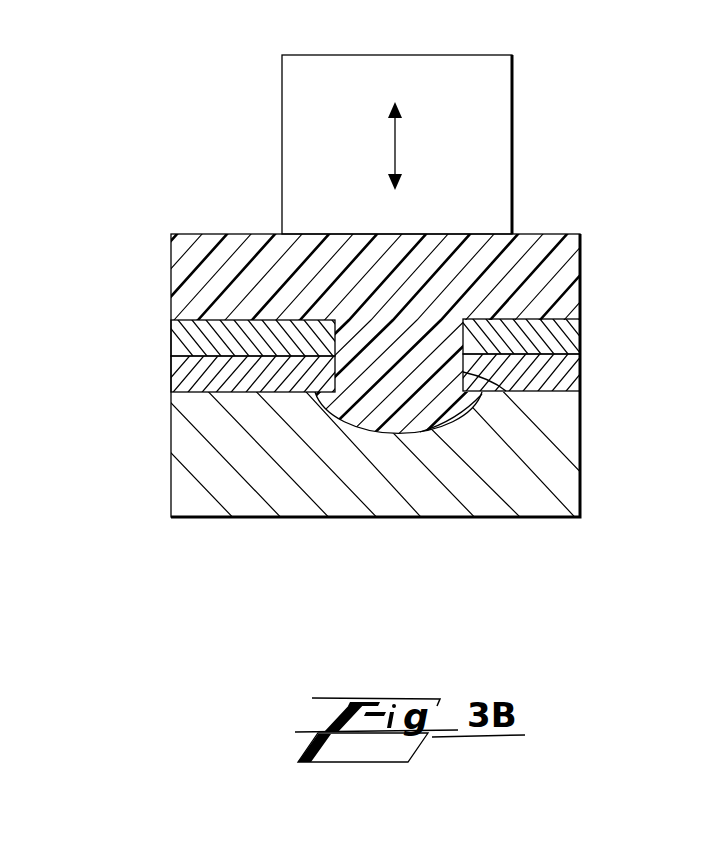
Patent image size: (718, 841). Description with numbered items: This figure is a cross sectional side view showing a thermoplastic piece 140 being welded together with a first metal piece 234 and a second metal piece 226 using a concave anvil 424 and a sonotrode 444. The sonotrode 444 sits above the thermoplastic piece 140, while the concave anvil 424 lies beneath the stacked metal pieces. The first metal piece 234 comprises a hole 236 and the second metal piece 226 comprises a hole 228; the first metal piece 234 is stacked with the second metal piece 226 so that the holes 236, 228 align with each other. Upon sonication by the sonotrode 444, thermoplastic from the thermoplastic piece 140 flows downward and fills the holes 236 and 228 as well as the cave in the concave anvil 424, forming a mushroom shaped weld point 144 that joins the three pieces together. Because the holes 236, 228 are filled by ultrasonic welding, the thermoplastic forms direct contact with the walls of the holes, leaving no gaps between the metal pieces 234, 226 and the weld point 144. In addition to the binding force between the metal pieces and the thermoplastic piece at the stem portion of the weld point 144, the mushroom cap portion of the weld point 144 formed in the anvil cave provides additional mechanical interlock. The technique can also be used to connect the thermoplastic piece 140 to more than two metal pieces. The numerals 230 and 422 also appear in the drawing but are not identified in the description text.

The thermoplastic piece 140 is at (220, 234).
The weld point 144 is at (351, 427).
The second metal piece 226 is at (171, 372).
The hole 228 is at (517, 395).
The device 230 is at (0, 297).
The first metal piece 234 is at (171, 342).
The hole 236 is at (463, 343).
The assembly 422 is at (0, 378).
The concave anvil 424 is at (178, 478).
The sonotrode 444 is at (512, 122).